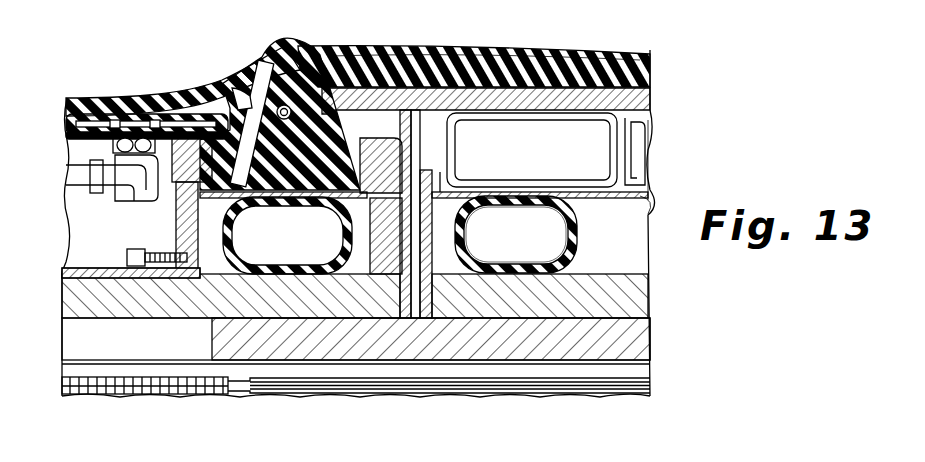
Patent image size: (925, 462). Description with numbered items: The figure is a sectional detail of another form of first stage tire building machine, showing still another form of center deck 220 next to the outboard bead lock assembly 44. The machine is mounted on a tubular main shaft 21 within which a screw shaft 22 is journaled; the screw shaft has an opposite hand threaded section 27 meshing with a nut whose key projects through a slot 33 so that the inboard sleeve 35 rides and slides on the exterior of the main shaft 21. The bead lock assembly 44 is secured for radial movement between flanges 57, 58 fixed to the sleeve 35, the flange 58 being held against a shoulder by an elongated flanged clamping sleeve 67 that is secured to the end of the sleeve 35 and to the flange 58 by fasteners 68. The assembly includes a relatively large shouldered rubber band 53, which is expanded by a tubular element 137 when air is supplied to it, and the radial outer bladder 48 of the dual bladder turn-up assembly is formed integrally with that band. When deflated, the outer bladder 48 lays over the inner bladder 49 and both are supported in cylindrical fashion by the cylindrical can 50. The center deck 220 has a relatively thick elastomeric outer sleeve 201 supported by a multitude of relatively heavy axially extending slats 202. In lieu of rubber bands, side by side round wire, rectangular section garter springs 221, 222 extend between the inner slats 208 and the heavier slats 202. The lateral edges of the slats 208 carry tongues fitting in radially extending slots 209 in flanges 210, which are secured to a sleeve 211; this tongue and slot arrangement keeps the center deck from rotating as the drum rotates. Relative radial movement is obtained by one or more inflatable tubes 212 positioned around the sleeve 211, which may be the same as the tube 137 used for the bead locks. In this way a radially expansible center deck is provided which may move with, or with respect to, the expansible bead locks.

The main shaft 21 is at (328, 364).
The screw shaft 22 is at (458, 386).
The threaded section 27 is at (172, 390).
The slot 33 is at (75, 338).
The inboard sleeve 35 is at (73, 295).
The outboard bead lock assembly 44 is at (243, 55).
The radial outer bladder 48 is at (82, 100).
The inner bladder 49 is at (67, 115).
The cylindrical can 50 is at (68, 147).
The shouldered rubber band 53 is at (342, 128).
The flange 57 is at (401, 155).
The flange 58 is at (180, 222).
The clamping sleeve 67 is at (78, 270).
The fasteners 68 is at (127, 247).
The tubular element 137 is at (235, 236).
The elastomeric outer sleeve 201 is at (650, 67).
The slats 202 is at (645, 100).
The slats 208 is at (647, 206).
The radially extending slots 209 is at (458, 220).
The flanges 210 is at (430, 168).
The sleeve 211 is at (637, 295).
The inflatable tubes 212 is at (577, 236).
The center deck 220 is at (650, 156).
The garter spring 221 is at (527, 117).
The garter spring 222 is at (633, 135).